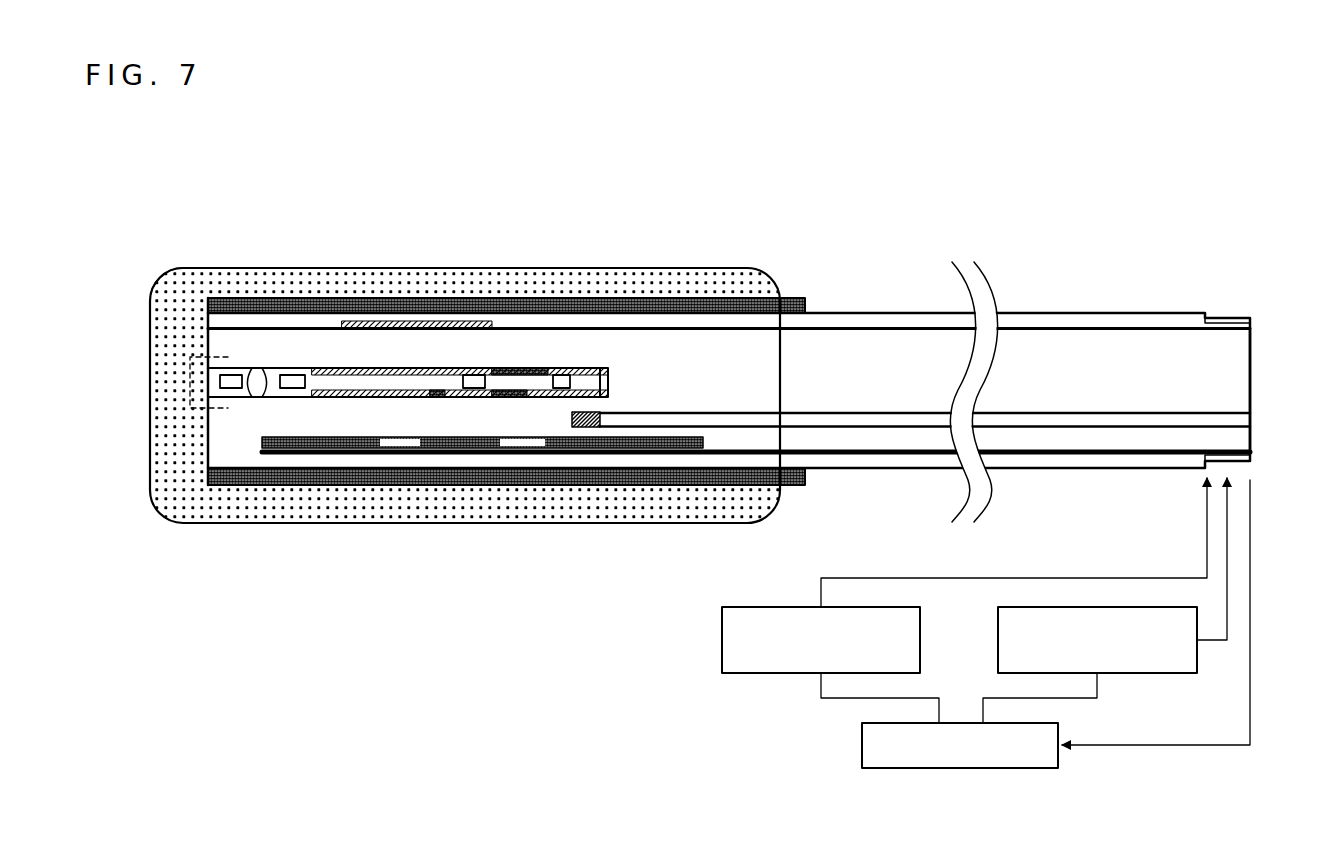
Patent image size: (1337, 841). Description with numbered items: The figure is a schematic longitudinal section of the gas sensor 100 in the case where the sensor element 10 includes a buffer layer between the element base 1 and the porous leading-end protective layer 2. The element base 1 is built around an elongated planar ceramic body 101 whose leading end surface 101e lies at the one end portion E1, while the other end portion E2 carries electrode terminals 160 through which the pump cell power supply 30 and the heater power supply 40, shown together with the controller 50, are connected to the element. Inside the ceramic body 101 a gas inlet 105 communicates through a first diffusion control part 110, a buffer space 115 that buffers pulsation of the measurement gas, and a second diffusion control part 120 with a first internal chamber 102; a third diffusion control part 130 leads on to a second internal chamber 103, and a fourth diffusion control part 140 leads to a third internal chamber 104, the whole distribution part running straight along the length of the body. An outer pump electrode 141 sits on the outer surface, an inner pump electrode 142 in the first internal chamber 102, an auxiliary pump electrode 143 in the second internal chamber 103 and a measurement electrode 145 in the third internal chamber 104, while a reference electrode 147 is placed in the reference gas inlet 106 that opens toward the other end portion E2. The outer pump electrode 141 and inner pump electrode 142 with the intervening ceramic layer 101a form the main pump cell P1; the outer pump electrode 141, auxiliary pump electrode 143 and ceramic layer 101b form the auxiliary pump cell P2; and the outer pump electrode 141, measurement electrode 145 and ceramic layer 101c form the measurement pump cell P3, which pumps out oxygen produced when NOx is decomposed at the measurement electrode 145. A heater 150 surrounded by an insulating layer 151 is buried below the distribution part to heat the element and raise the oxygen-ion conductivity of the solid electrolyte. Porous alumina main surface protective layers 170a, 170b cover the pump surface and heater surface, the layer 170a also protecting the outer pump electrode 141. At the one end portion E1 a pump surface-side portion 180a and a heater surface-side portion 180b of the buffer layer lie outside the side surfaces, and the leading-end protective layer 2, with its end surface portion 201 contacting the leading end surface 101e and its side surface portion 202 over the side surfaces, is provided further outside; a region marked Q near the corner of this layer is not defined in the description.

The element base 1 is at (834, 306).
The leading-end protective layer 2 is at (744, 268).
The sensor element 10 is at (842, 220).
The pump cell power supply 30 is at (1144, 675).
The heater power supply 40 is at (765, 675).
The controller 50 is at (961, 770).
The gas sensor 100 is at (632, 665).
The ceramic body 101 is at (1105, 358).
The ceramic layer 101a is at (297, 340).
The ceramic layer 101b is at (496, 345).
The ceramic layer 101c is at (609, 376).
The leading end surface 101e is at (207, 346).
The first internal chamber 102 is at (392, 372).
The second internal chamber 103 is at (523, 390).
The third internal chamber 104 is at (601, 392).
The gas inlet 105 is at (212, 380).
The reference gas inlet 106 is at (1238, 420).
The first diffusion control part 110 is at (251, 375).
The buffer space 115 is at (262, 398).
The second diffusion control part 120 is at (264, 375).
The third diffusion control part 130 is at (472, 376).
The fourth diffusion control part 140 is at (562, 376).
The outer pump electrode 141 is at (368, 326).
The inner pump electrode 142 is at (335, 372).
The auxiliary pump electrode 143 is at (535, 378).
The measurement electrode 145 is at (586, 380).
The reference electrode 147 is at (585, 428).
The heater 150 is at (480, 445).
The insulating layer 151 is at (400, 445).
The electrode terminals 160 is at (1232, 320).
The main surface protective layer 170a is at (900, 326).
The main surface protective layer 170b is at (900, 457).
The pump surface-side portion of buffer layer 180a is at (688, 305).
The heater surface-side portion of buffer layer 180b is at (681, 478).
The end surface portion 201 is at (168, 332).
The side surface portion 202 is at (265, 262).
The main pump cell P1 is at (388, 195).
The auxiliary pump cell P2 is at (548, 195).
The measurement pump cell P3 is at (650, 195).
The corner region Q is at (155, 288).
The one end portion E1 is at (150, 416).
The other end portion E2 is at (1272, 380).